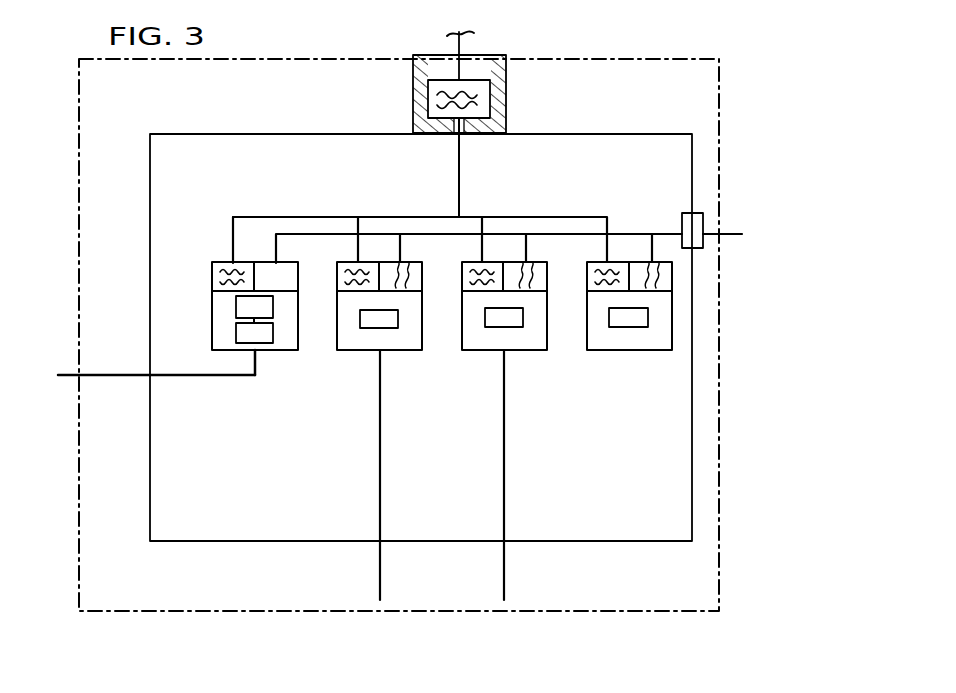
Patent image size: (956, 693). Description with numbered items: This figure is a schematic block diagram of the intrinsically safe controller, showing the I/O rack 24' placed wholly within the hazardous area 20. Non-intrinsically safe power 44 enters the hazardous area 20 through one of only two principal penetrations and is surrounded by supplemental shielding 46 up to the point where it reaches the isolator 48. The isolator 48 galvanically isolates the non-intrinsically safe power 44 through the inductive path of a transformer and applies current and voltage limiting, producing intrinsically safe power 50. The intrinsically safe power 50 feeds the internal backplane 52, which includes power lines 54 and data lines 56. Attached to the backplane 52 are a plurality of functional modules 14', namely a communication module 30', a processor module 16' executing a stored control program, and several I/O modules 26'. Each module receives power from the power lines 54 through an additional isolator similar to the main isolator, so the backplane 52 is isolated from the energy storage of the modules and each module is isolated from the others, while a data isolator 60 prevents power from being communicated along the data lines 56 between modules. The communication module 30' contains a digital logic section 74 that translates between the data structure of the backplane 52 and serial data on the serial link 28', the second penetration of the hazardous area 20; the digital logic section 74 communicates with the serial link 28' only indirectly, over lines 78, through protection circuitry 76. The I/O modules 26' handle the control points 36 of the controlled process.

The hazardous area 20 is at (78, 112).
The I/O rack 24' is at (421, 305).
The non-intrinsically safe power 44 is at (470, 40).
The supplemental shielding 46 is at (506, 90).
The isolator 48 is at (476, 134).
The intrinsically safe power 50 is at (458, 190).
The backplane 52 is at (292, 187).
The power lines 54 is at (252, 216).
The data lines 56 is at (336, 233).
The isolator 60 is at (422, 282).
The digital logic section 74 is at (236, 306).
The protection circuitry 76 is at (236, 333).
The lines 78 is at (236, 320).
The serial link 28' is at (156, 344).
The communication module 30' is at (257, 387).
The functional modules 14' is at (279, 343).
The I/O modules 26' is at (442, 333).
The processor module 16' is at (621, 331).
The control points 36 is at (480, 598).